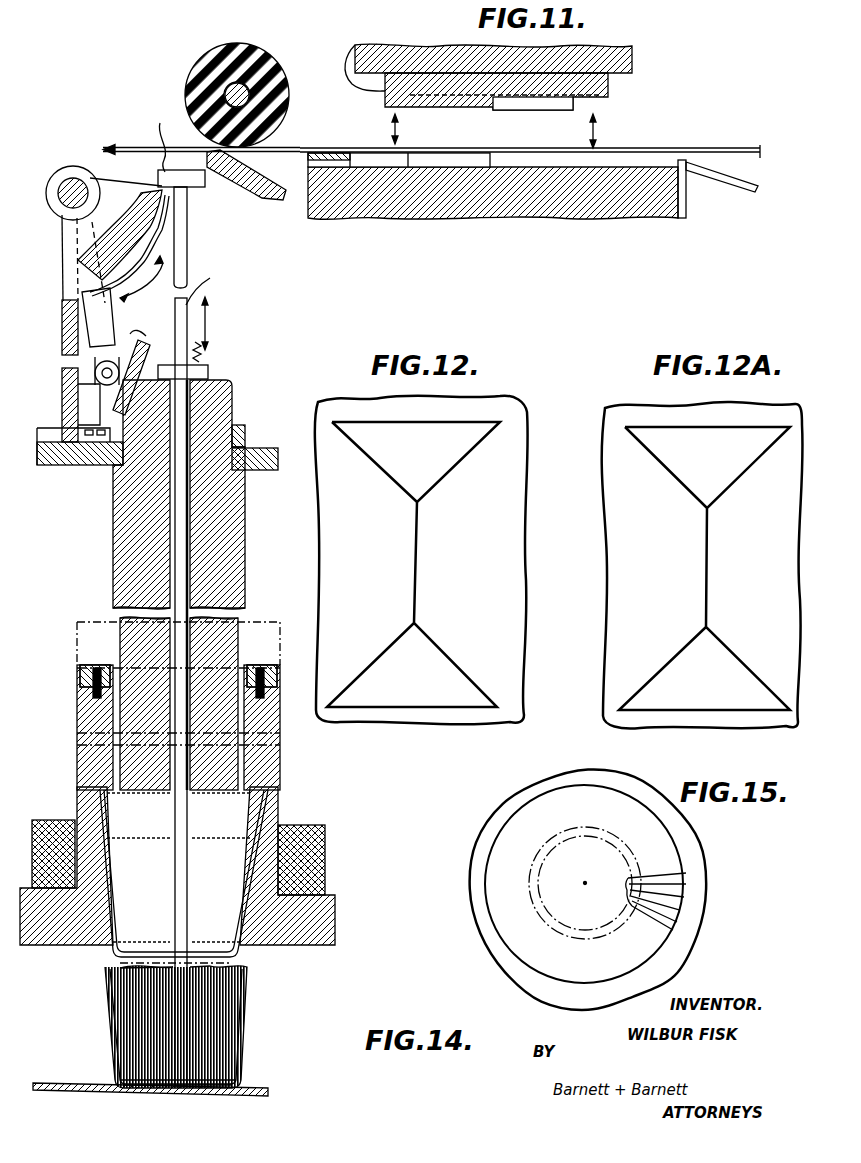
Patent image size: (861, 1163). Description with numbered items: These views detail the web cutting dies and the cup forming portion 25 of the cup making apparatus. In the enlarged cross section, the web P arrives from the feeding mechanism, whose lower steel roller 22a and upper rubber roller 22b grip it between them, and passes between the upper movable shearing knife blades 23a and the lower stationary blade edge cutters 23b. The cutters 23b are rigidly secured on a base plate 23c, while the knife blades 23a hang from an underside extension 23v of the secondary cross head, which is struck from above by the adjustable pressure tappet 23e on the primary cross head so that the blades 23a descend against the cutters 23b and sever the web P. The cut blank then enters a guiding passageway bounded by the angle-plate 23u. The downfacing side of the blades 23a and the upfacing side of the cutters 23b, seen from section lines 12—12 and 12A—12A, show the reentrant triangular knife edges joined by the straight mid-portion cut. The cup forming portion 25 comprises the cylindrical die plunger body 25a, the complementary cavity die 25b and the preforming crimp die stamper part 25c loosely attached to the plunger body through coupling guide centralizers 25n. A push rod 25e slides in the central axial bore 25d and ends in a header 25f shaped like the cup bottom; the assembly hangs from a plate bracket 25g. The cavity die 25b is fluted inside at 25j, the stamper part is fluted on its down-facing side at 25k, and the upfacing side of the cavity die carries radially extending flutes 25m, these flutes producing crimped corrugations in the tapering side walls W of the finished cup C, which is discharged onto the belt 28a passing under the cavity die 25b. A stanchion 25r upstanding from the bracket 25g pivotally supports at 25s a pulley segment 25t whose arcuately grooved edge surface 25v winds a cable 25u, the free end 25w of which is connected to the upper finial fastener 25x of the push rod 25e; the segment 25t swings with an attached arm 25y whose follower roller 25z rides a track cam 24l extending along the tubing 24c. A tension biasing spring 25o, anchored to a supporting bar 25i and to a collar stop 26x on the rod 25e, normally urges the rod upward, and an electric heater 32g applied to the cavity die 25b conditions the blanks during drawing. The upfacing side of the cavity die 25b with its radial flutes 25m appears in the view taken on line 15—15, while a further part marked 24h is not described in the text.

In FIG. 11, the section line 12— 12 is at (322, 122).
In FIG. 11, the section line 12a—12a 12A is at (363, 133).
In FIG. 14, the section line 15— 15 is at (47, 785).
In FIG. 14, the lower steel roller 22a is at (280, 55).
In FIG. 14, the upper rubber roller 22b is at (262, 200).
In FIG. 11, the shearing knife blades 23a is at (493, 102).
In FIG. 12, the shearing knife blades 23a is at (495, 522).
In FIG. 11, the blade edge cutters 23b is at (485, 155).
In FIG. 12A, the blade edge cutters 23b is at (622, 592).
In FIG. 11, the base plate 23c is at (528, 218).
In FIG. 11, the adjustable pressure tappet 23e is at (632, 65).
In FIG. 11, the angle-plate 23u is at (690, 180).
In FIG. 11, the underside extension 23v is at (362, 40).
In FIG. 14, the tubing 24c is at (140, 320).
In FIG. 14, the body shaft 24h is at (240, 588).
In FIG. 14, the track cam 24l is at (104, 387).
In FIG. 14, the cup forming portion 25 is at (110, 557).
In FIG. 14, the die plunger body 25a is at (232, 410).
In FIG. 14, the cavity die 25b is at (265, 835).
In FIG. 15, the cavity die 25b is at (508, 957).
In FIG. 14, the preforming crimp die stamper part 25c is at (270, 722).
In FIG. 14, the central axial bore 25d is at (190, 490).
In FIG. 14, the push rod 25e is at (187, 267).
In FIG. 14, the header 25f is at (138, 1087).
In FIG. 14, the plate bracket 25g is at (262, 470).
In FIG. 14, the supporting bar 25i is at (245, 435).
In FIG. 14, the cavity die flutes 25j is at (248, 922).
In FIG. 15, the cavity die flutes 25j is at (636, 883).
In FIG. 14, the stamper part flutes 25k is at (90, 735).
In FIG. 14, the radially extending flutes 25m is at (268, 795).
In FIG. 15, the radially extending flutes 25m is at (672, 920).
In FIG. 14, the coupling guide centralizer 25n is at (288, 650).
In FIG. 14, the tension biasing spring 25o is at (198, 358).
In FIG. 14, the stanchion 25r is at (92, 340).
In FIG. 14, the pivot 25s is at (70, 182).
In FIG. 14, the pulley segment 25t is at (110, 190).
In FIG. 14, the cable 25u is at (160, 221).
In FIG. 14, the arcuately shaped grooved edge surface 25v is at (98, 268).
In FIG. 14, the free end of cable 25w is at (160, 120).
In FIG. 14, the upper finial fastener 25x is at (195, 187).
In FIG. 14, the arm 25y is at (65, 366).
In FIG. 14, the follower roller 25z is at (80, 396).
In FIG. 14, the collar stop 26x is at (207, 366).
In FIG. 14, the belt 28a is at (245, 1095).
In FIG. 14, the electric heater 32g is at (328, 870).
In FIG. 14, the web P is at (146, 141).
In FIG. 14, the tapering side walls W is at (245, 1035).
In FIG. 14, the cup c is at (238, 1052).